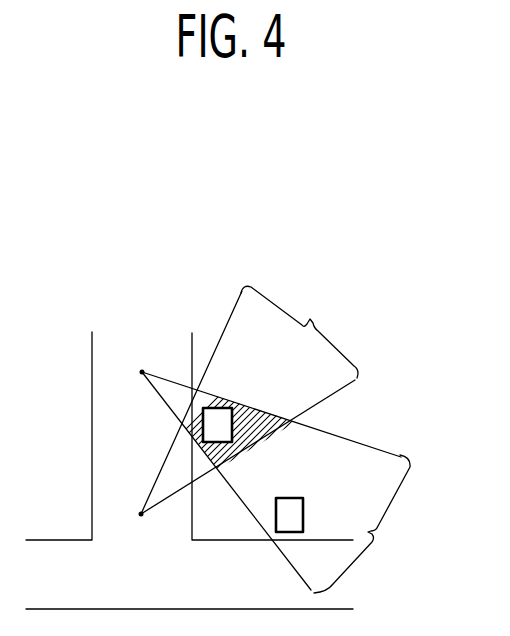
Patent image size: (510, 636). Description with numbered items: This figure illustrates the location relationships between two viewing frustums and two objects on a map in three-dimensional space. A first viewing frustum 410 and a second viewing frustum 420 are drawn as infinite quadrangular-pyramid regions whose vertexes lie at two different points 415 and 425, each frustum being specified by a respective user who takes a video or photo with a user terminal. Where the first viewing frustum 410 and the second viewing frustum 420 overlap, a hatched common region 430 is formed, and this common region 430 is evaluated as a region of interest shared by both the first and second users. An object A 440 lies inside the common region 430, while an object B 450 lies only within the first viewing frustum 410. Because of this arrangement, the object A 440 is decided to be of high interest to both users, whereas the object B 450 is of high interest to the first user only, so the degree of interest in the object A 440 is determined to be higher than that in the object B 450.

The first viewing frustum 410 is at (276, 482).
The vertex point of first viewing frustum 415 is at (142, 370).
The second viewing frustum 420 is at (249, 400).
The vertex point of second viewing frustum 425 is at (141, 516).
The common region 430 is at (258, 415).
The object A 440 is at (215, 407).
The object B 450 is at (293, 497).